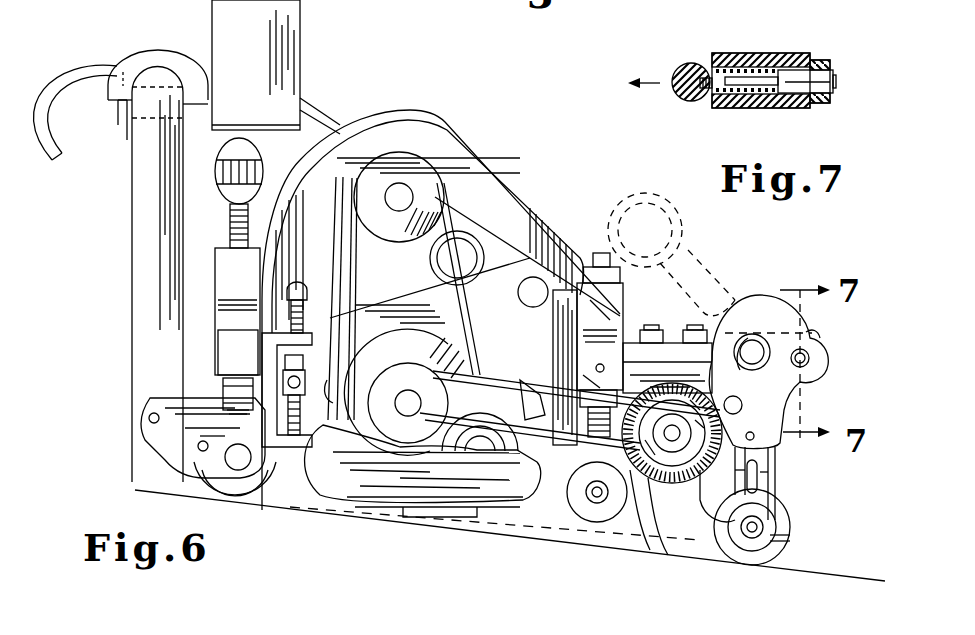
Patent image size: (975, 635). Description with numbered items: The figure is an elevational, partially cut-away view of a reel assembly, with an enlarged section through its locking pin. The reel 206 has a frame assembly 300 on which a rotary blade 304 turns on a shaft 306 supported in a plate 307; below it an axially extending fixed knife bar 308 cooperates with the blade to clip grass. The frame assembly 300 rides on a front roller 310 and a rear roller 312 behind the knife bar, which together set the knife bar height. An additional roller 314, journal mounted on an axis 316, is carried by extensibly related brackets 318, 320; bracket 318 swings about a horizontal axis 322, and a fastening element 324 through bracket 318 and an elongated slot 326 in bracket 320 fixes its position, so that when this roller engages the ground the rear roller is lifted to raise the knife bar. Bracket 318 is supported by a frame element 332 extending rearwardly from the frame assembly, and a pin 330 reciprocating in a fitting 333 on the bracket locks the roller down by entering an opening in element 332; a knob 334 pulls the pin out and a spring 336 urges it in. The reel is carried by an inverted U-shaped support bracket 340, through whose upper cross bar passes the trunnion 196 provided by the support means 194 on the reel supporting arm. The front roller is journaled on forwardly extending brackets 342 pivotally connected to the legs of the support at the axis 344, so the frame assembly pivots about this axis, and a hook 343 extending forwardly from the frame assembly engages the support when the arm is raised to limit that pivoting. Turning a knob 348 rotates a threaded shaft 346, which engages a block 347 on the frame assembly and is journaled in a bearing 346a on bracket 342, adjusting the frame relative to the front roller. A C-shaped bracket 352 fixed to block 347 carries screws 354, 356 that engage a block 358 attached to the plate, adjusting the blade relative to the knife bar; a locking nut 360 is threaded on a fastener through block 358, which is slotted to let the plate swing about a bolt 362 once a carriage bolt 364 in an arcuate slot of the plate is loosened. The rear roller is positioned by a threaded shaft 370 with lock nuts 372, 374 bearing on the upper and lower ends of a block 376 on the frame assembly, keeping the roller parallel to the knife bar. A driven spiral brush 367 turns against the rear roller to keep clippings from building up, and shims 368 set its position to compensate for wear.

In FIG. 6, the support means 194 is at (300, 30).
In FIG. 6, the trunnion 196 is at (113, 114).
In FIG. 6, the reel 206 is at (494, 144).
In FIG. 6, the frame assembly 300 is at (323, 132).
In FIG. 6, the rotary blade 304 is at (403, 513).
In FIG. 6, the shaft 306 is at (408, 410).
In FIG. 6, the plate 307 is at (505, 311).
In FIG. 6, the fixed knife bar 308 is at (480, 515).
In FIG. 6, the front roller 310 is at (222, 490).
In FIG. 6, the rear roller 312 is at (622, 548).
In FIG. 6, the additional roller 314 is at (640, 180).
In FIG. 6, the axis 316 is at (760, 520).
In FIG. 6, the bracket 318 is at (797, 403).
In FIG. 7, the bracket 318 is at (818, 62).
In FIG. 6, the bracket 320 is at (770, 482).
In FIG. 6, the horizontally extending axis 322 is at (752, 340).
In FIG. 6, the fastening element 324 is at (776, 452).
In FIG. 6, the elongated slot 326 is at (735, 485).
In FIG. 6, the pin 330 is at (809, 358).
In FIG. 7, the pin 330 is at (836, 87).
In FIG. 6, the frame element 332 is at (816, 340).
In FIG. 7, the fitting 333 is at (780, 53).
In FIG. 7, the knob 334 is at (684, 70).
In FIG. 7, the spring 336 is at (743, 53).
In FIG. 6, the inverted U-shaped support bracket 340 is at (143, 253).
In FIG. 6, the brackets 342 is at (183, 447).
In FIG. 6, the hook 343 is at (87, 70).
In FIG. 6, the axis 344 is at (149, 416).
In FIG. 6, the threaded shaft 346 is at (240, 217).
In FIG. 6, the bearing 346a is at (237, 393).
In FIG. 6, the block 347 is at (227, 350).
In FIG. 6, the knob 348 is at (263, 172).
In FIG. 6, the C-shaped bracket 352 is at (265, 498).
In FIG. 6, the screw 354 is at (308, 300).
In FIG. 6, the screw 356 is at (305, 513).
In FIG. 6, the block 358 is at (345, 365).
In FIG. 6, the locking nut 360 is at (349, 397).
In FIG. 6, the bolt 362 is at (527, 413).
In FIG. 6, the carriage bolt 364 is at (533, 280).
In FIG. 6, the driven spiral brush 367 is at (670, 553).
In FIG. 6, the shims 368 is at (683, 334).
In FIG. 6, the threaded shaft 370 is at (605, 252).
In FIG. 6, the lock nut 372 is at (596, 265).
In FIG. 6, the lock nut 374 is at (598, 392).
In FIG. 6, the block 376 is at (620, 298).